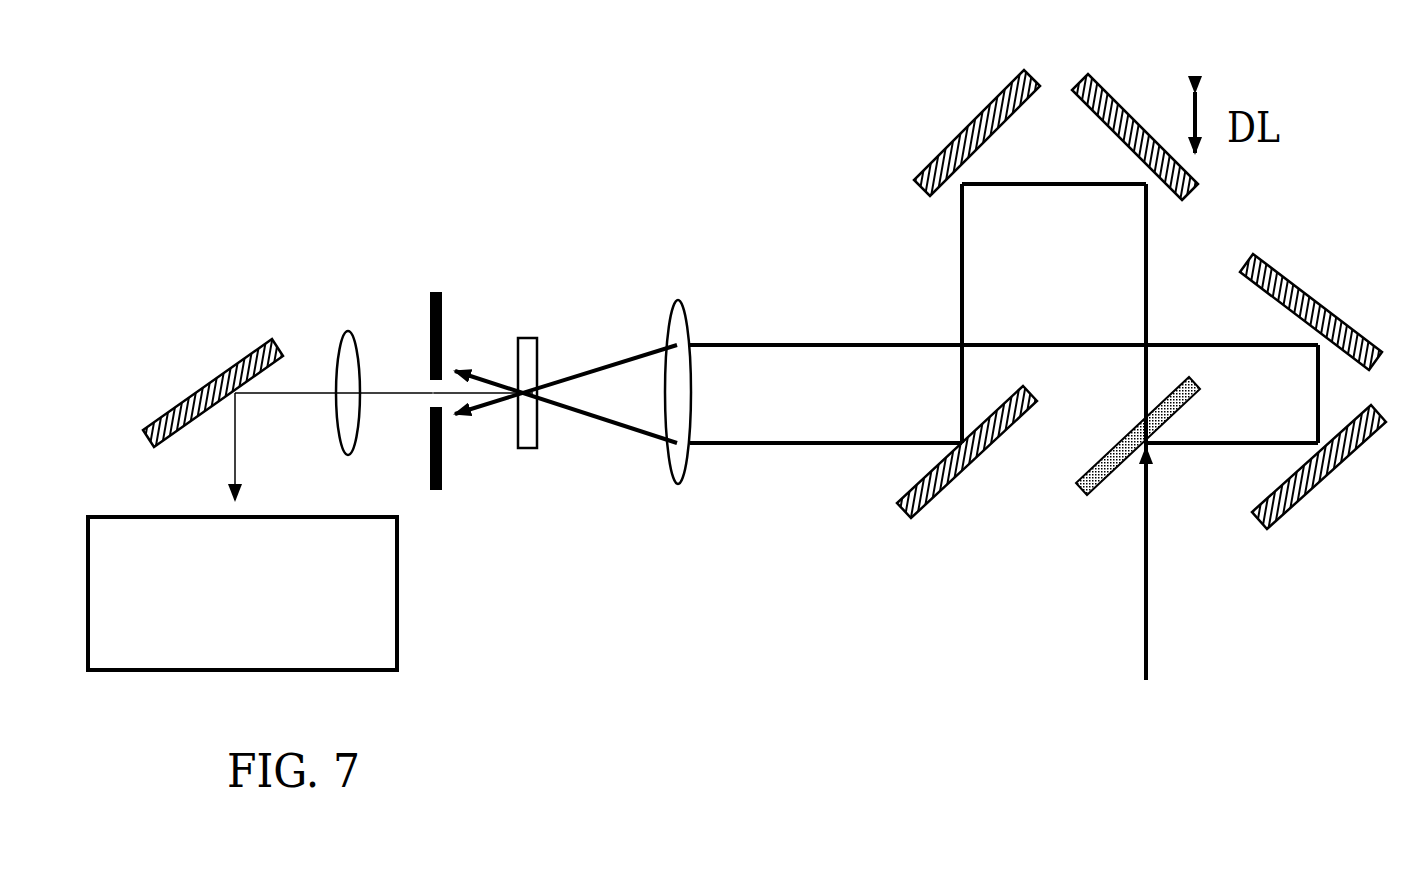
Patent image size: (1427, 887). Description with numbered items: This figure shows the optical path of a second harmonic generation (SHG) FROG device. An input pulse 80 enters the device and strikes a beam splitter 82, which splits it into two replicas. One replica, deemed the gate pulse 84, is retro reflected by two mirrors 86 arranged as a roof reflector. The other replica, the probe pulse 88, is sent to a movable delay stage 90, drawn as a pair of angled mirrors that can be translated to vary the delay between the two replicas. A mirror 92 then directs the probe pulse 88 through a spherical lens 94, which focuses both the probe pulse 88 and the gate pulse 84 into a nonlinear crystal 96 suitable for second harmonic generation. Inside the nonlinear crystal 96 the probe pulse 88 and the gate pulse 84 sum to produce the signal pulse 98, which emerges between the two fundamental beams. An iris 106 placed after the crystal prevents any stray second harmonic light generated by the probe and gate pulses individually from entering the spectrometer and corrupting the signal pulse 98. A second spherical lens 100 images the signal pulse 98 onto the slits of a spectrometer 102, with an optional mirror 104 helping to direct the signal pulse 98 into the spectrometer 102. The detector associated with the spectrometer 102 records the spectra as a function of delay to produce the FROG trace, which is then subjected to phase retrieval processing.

The input pulse 80 is at (1158, 593).
The beam splitter 82 is at (1087, 507).
The gate pulse 84 is at (790, 330).
The mirrors 86 is at (1308, 287).
The probe pulse 88 is at (775, 455).
The movable delay stage 90 is at (950, 145).
The mirror 92 is at (912, 535).
The spherical lens 94 is at (678, 495).
The nonlinear crystal 96 is at (525, 327).
The signal pulse 98 is at (398, 382).
The spherical lens 100 is at (343, 318).
The spectrometer 102 is at (415, 605).
The optional mirror 104 is at (225, 347).
The iris 106 is at (435, 280).